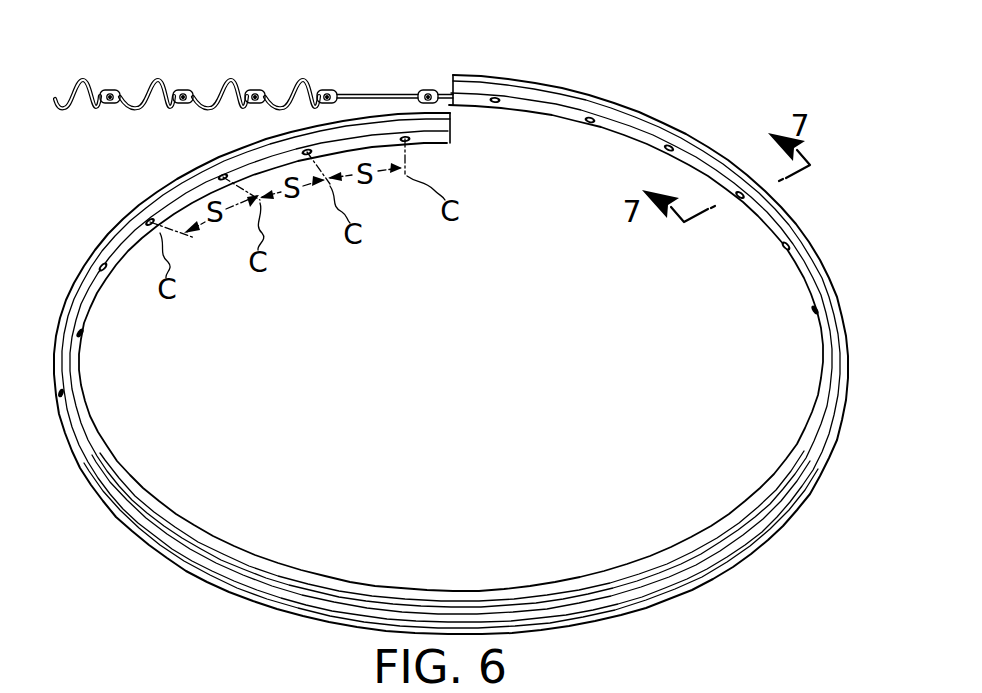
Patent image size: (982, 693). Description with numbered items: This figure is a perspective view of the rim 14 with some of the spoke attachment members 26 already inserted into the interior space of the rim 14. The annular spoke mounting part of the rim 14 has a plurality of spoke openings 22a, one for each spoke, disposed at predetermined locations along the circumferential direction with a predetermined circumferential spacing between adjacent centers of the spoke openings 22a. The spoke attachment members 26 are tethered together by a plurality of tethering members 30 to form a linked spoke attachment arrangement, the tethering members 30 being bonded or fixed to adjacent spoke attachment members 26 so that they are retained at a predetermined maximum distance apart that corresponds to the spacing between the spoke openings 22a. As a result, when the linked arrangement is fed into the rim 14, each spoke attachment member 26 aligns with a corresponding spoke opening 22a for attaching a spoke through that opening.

The rim 14 is at (660, 102).
The spoke openings 22a is at (669, 152).
The spoke attachment members 26 is at (112, 78).
The tethering members 30 is at (82, 79).